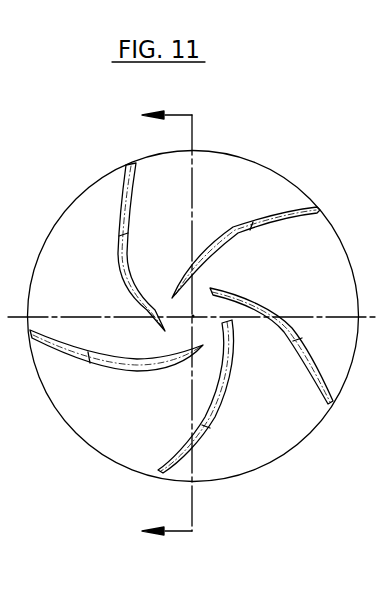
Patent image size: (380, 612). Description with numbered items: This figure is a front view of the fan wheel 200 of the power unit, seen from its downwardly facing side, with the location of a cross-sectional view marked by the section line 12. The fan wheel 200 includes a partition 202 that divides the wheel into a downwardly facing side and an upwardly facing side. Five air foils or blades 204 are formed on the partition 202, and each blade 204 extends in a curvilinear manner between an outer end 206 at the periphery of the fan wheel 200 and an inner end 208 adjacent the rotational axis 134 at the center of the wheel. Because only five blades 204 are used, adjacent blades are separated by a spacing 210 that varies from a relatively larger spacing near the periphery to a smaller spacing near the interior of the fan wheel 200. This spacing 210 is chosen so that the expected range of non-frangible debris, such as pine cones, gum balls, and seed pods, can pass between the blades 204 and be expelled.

The section line 12- 12 is at (153, 334).
The rotational axis 134 is at (195, 315).
The fan wheel 200 is at (260, 148).
The partition 202 is at (297, 429).
The blade 204 is at (223, 230).
The outer end 206 is at (158, 473).
The inner end 208 is at (228, 318).
The spacing 210 is at (150, 460).